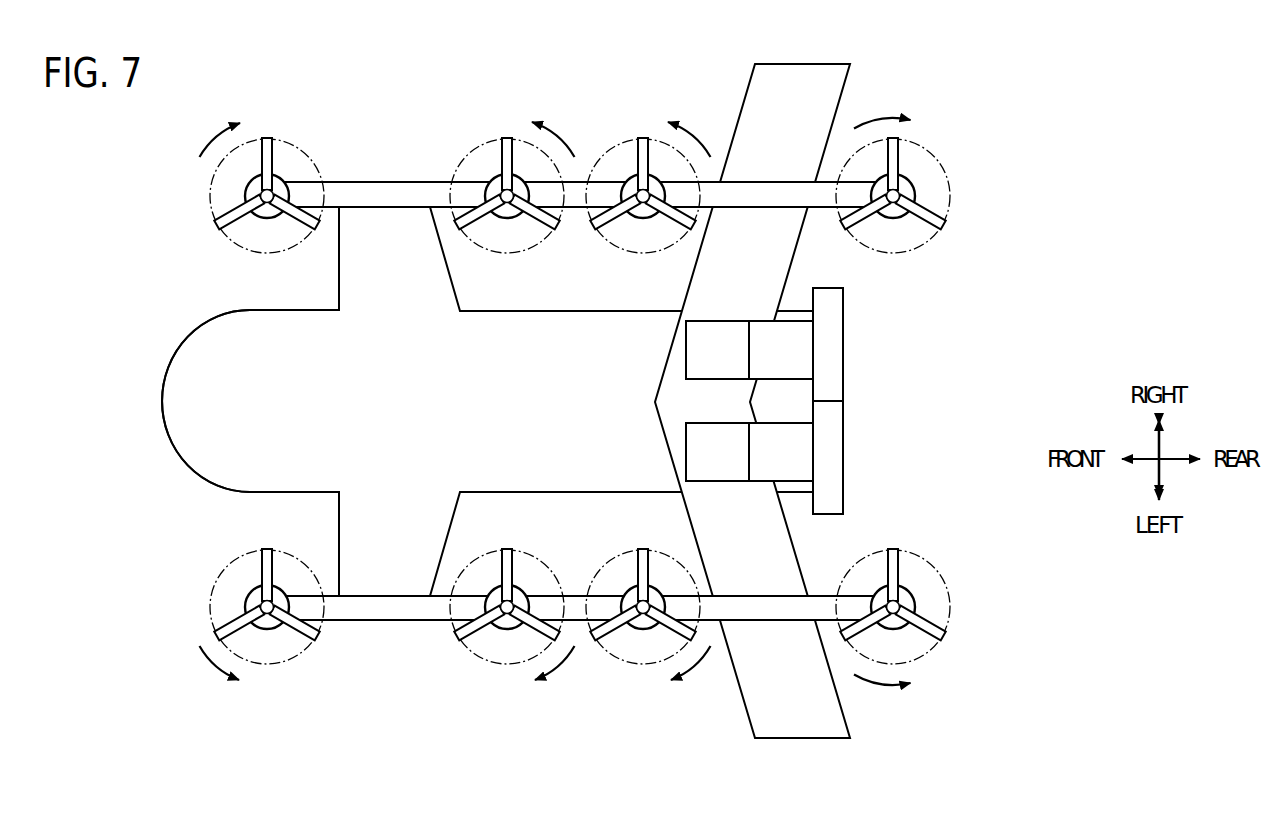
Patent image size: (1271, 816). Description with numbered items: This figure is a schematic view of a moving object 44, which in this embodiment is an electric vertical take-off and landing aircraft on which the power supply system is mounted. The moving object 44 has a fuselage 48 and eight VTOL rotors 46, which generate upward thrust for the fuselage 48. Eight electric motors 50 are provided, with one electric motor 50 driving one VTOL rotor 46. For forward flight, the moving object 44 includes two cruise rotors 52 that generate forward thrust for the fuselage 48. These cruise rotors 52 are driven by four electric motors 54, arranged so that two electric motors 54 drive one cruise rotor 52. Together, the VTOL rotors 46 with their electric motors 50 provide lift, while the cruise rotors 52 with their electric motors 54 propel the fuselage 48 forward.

The moving object 44 is at (83, 157).
The VTOL rotor 46 is at (265, 146).
The fuselage 48 is at (168, 372).
The electric motor 50 is at (266, 219).
The cruise rotor 52 is at (845, 331).
The electric motor 54 is at (700, 352).